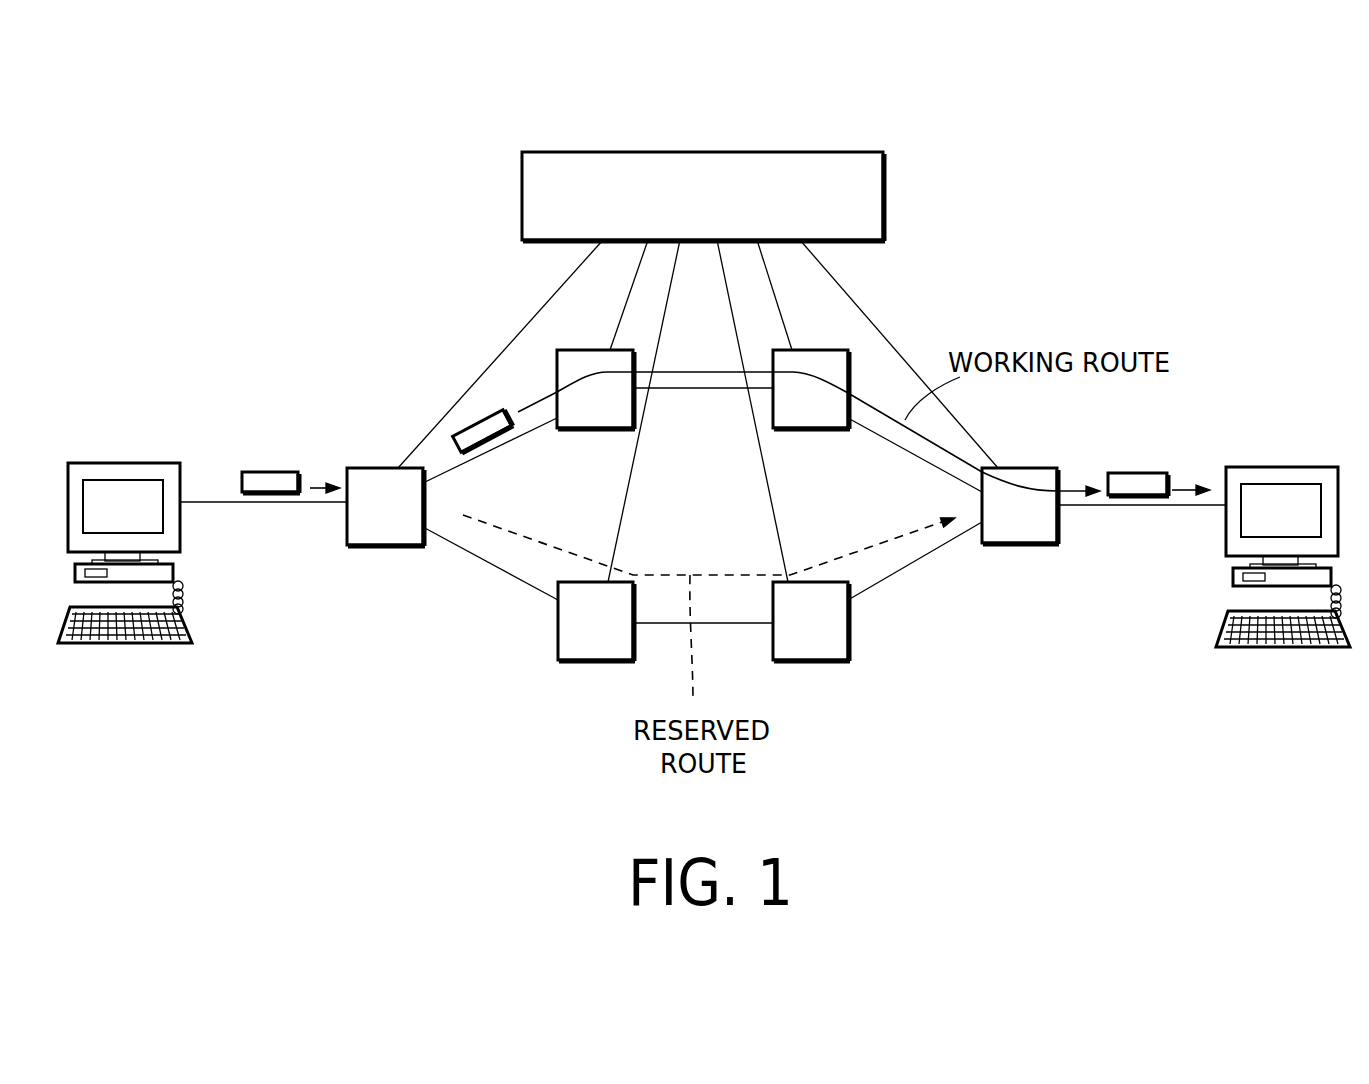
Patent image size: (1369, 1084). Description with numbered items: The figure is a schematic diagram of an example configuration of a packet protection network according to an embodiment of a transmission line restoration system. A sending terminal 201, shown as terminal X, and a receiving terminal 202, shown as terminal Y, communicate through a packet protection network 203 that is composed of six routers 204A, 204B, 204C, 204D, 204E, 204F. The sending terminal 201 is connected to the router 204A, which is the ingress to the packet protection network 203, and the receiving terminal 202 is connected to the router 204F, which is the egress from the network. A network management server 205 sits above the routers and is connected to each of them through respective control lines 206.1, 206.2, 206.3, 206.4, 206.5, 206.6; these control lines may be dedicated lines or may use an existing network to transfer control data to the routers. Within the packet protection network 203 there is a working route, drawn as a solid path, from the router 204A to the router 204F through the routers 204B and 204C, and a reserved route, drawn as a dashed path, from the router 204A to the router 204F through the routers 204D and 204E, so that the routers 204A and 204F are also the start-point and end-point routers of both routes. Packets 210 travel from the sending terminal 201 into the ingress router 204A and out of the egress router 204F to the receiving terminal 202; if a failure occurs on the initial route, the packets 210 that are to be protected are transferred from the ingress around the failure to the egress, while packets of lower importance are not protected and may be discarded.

The sending terminal 201 is at (128, 463).
The receiving terminal 202 is at (1278, 467).
The packet protection network 203 is at (347, 333).
The router 204A is at (385, 545).
The router 204B is at (580, 428).
The router 204C is at (815, 428).
The router 204D is at (585, 660).
The router 204E is at (800, 660).
The router 204F is at (1000, 545).
The network management server 205 is at (885, 180).
The control line 206.1 is at (545, 303).
The control line 206.2 is at (617, 326).
The control line 206.3 is at (670, 303).
The control line 206.4 is at (762, 462).
The control line 206.5 is at (782, 320).
The control line 206.6 is at (838, 277).
The packets 210 is at (266, 471).